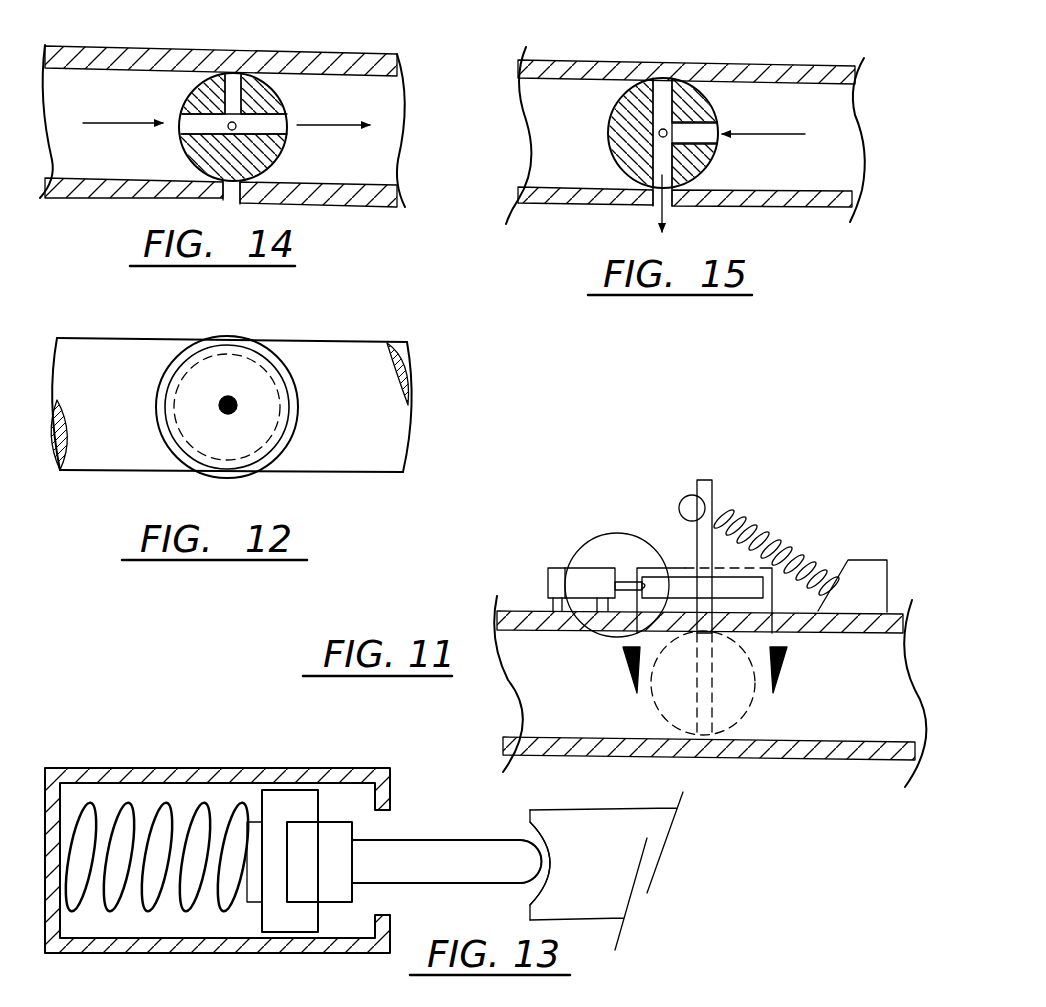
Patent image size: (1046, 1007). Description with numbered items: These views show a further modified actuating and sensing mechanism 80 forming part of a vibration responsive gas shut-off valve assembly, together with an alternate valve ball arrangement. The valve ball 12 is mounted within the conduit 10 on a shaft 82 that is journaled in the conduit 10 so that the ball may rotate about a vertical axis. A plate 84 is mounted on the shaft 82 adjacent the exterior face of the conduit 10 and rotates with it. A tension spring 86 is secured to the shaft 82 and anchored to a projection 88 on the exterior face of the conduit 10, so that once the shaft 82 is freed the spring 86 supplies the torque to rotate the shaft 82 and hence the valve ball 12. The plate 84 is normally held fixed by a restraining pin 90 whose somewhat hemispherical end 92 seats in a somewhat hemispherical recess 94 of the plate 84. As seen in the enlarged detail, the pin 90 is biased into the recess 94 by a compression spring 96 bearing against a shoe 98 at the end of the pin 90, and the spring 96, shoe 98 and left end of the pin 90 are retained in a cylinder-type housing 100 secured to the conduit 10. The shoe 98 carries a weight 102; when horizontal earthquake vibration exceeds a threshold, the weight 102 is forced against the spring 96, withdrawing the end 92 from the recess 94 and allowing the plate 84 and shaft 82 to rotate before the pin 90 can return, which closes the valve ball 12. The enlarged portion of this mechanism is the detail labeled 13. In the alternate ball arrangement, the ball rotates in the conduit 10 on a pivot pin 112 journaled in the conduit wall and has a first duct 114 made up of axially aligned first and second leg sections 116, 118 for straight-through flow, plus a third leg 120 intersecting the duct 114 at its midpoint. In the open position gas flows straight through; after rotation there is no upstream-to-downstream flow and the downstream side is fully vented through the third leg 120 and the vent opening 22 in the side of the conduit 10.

In FIG. 14, the conduit 10 is at (355, 34).
In FIG. 15, the conduit 10 is at (597, 60).
In FIG. 12, the conduit 10 is at (348, 342).
In FIG. 12, the valve ball 12 is at (247, 435).
In FIG. 11, the valve ball 12 is at (705, 683).
In FIG. 11, the detail circle (FIG. 13) 13 is at (597, 533).
In FIG. 14, the vent opening 22 is at (231, 190).
In FIG. 15, the vent opening 22 is at (668, 190).
In FIG. 11, the actuating and sensing mechanism 80 is at (852, 516).
In FIG. 12, the shaft 82 is at (224, 396).
In FIG. 11, the shaft 82 is at (703, 478).
In FIG. 12, the plate 84 is at (275, 352).
In FIG. 11, the plate 84 is at (676, 570).
In FIG. 13, the plate 84 is at (602, 823).
In FIG. 11, the tension spring 86 is at (780, 537).
In FIG. 11, the projection 88 is at (864, 573).
In FIG. 11, the restraining pin 90 is at (633, 580).
In FIG. 13, the restraining pin 90 is at (413, 842).
In FIG. 13, the hemispherical end 92 is at (530, 863).
In FIG. 13, the hemispherical recess 94 is at (548, 857).
In FIG. 13, the compression spring 96 is at (166, 802).
In FIG. 13, the shoe 98 is at (295, 800).
In FIG. 11, the cylinder-type housing 100 is at (550, 583).
In FIG. 13, the cylinder-type housing 100 is at (173, 953).
In FIG. 13, the weight 102 is at (323, 883).
In FIG. 14, the pivot pin 112 is at (250, 100).
In FIG. 15, the pivot pin 112 is at (622, 110).
In FIG. 14, the first duct 114 is at (213, 149).
In FIG. 15, the first duct 114 is at (684, 157).
In FIG. 14, the first leg section 116 is at (183, 120).
In FIG. 15, the first leg section 116 is at (665, 90).
In FIG. 14, the second leg section 118 is at (283, 130).
In FIG. 15, the second leg section 118 is at (657, 163).
In FIG. 14, the third leg 120 is at (232, 78).
In FIG. 15, the third leg 120 is at (703, 131).